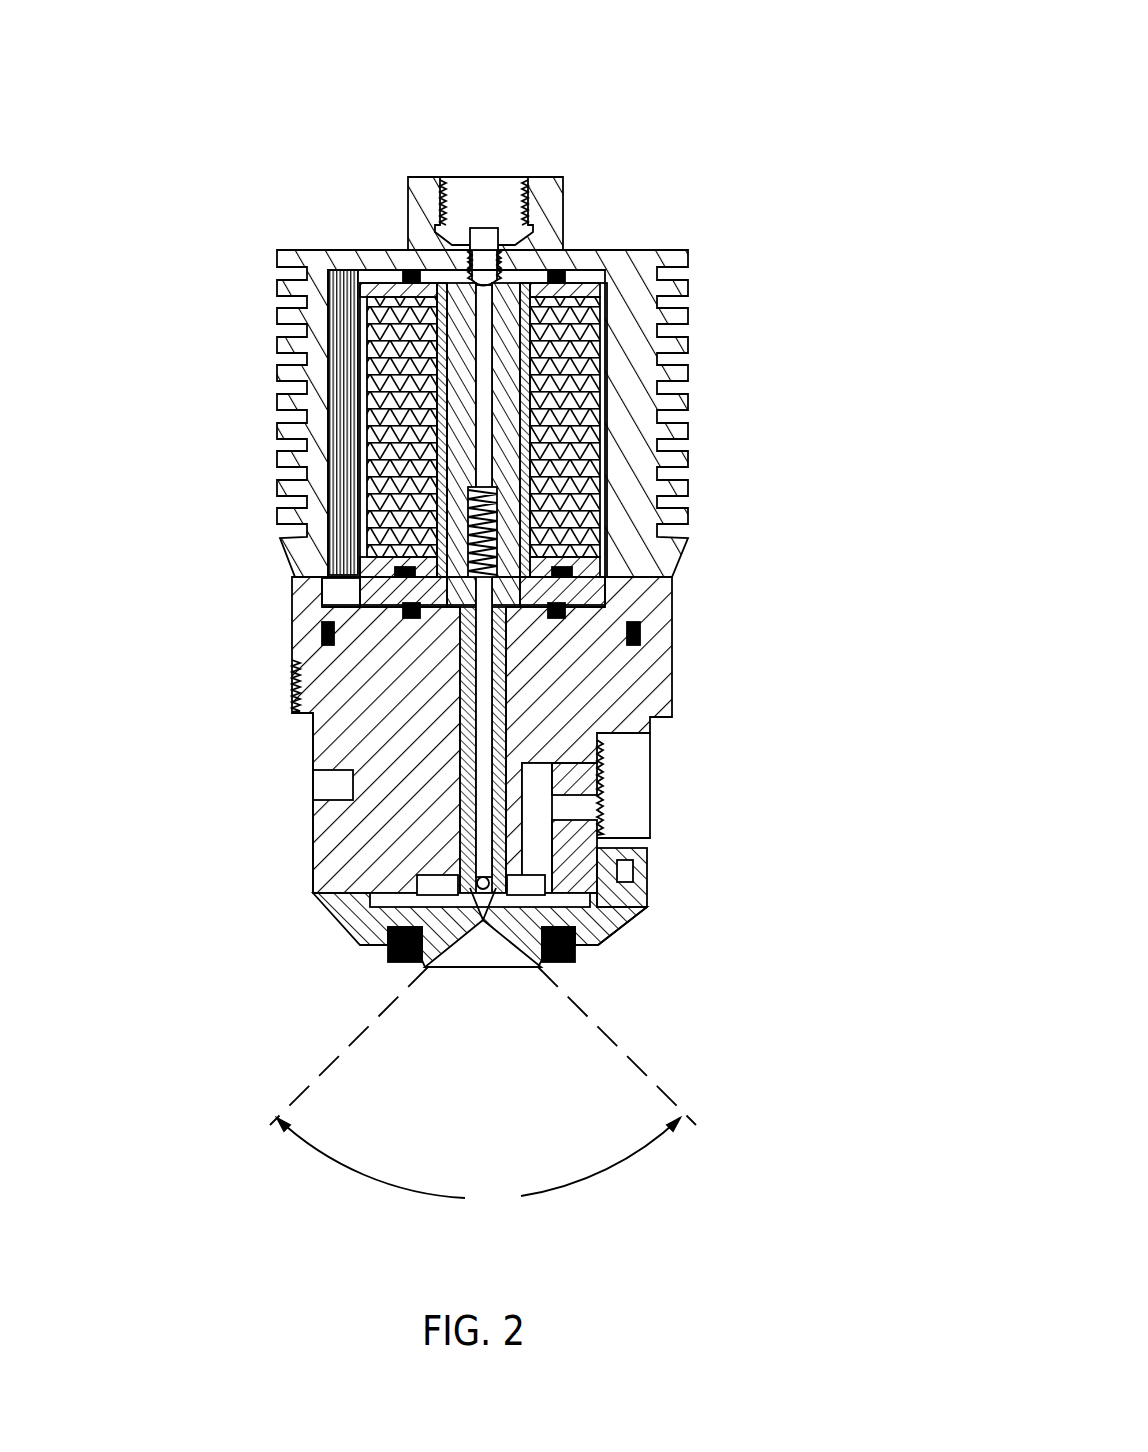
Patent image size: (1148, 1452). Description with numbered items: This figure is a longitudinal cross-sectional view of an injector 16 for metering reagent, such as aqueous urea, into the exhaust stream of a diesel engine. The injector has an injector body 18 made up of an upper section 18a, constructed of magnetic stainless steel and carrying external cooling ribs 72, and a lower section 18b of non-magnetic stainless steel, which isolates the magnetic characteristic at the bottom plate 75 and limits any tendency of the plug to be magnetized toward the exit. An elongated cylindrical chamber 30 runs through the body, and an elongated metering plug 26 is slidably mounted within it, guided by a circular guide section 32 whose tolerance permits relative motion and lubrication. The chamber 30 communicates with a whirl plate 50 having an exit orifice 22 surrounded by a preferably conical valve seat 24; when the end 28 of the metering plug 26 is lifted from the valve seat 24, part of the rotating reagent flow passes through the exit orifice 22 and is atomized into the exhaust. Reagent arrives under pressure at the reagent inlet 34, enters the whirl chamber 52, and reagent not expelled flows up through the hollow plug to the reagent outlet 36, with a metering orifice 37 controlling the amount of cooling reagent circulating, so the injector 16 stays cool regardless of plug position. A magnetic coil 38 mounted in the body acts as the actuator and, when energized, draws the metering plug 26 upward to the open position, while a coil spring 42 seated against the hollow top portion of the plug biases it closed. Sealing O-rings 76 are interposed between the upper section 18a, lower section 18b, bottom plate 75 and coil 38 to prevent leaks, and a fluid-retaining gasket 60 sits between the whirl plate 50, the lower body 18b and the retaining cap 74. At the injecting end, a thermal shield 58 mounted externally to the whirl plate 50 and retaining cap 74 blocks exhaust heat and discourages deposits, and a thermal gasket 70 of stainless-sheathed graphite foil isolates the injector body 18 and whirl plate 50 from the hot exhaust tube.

The injector 16 is at (588, 78).
The injector body 18 is at (630, 713).
The upper section of injector body 18a is at (292, 603).
The lower section of injector body 18b is at (313, 840).
The exit orifice 22 is at (480, 925).
The valve seat 24 is at (440, 968).
The metering plug 26 is at (460, 730).
The end of metering plug 28 is at (370, 893).
The chamber 30 is at (482, 715).
The circular guide section 32 is at (497, 668).
The reagent inlet 34 is at (535, 807).
The reagent outlet 36 is at (500, 190).
The metering orifice 37 is at (485, 275).
The magnetic coil 38 is at (575, 280).
The coil spring 42 is at (500, 578).
The whirl plate 50 is at (540, 968).
The whirl chamber 52 is at (430, 882).
The thermal shield 58 is at (590, 945).
The fluid-retaining gasket 60 is at (598, 915).
The thermal gasket 70 is at (388, 950).
The cooling ribs 72 is at (688, 380).
The retaining cap 74 is at (615, 893).
The bottom plate 75 is at (672, 600).
The sealing O-rings 76 is at (400, 268).